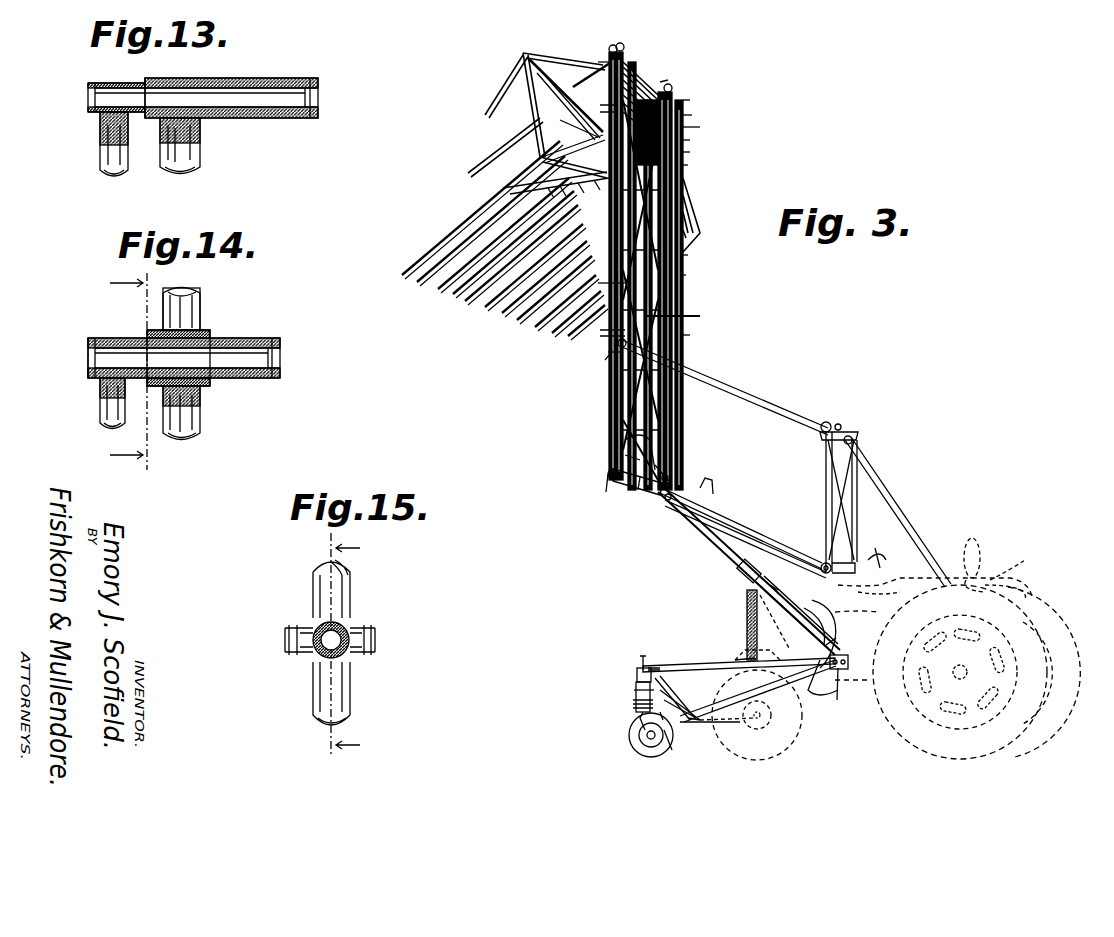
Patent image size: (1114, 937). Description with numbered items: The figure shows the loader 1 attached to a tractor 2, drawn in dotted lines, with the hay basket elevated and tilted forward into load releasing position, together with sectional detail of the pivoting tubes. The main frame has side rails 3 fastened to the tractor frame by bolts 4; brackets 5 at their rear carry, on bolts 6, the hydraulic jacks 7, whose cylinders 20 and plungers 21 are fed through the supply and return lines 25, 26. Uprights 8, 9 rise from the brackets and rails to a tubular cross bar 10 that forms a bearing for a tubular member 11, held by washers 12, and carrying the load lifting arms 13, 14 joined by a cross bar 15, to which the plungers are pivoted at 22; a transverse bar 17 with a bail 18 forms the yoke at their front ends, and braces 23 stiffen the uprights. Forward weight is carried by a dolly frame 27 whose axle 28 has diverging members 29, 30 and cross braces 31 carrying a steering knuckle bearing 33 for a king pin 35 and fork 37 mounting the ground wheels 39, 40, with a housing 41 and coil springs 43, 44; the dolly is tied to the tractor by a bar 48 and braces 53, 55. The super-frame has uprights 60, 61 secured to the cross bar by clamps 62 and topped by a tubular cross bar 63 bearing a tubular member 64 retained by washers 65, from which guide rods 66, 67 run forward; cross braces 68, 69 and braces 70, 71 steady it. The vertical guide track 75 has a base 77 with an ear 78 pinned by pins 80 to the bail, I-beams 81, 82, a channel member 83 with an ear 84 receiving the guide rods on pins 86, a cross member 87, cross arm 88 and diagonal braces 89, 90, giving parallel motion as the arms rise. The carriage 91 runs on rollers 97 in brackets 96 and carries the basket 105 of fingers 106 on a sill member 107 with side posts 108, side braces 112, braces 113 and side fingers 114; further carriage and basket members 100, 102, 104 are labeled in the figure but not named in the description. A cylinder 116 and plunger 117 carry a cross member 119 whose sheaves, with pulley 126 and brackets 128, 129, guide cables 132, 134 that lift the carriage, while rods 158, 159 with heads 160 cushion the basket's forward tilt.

In FIG. 3, the loader 1 is at (697, 362).
In FIG. 3, the tractor 2 is at (978, 585).
In FIG. 3, the side rails 3 is at (750, 652).
In FIG. 3, the bolts 4 is at (792, 658).
In FIG. 3, the brackets 5 is at (838, 695).
In FIG. 3, the bolts 6 is at (823, 677).
In FIG. 3, the hydraulic jacks 7 is at (730, 568).
In FIG. 3, the upright 8 is at (839, 655).
In FIG. 14, the upright 9 is at (200, 418).
In FIG. 15, the upright 9 is at (352, 690).
In FIG. 14, the tubular cross bar 10 is at (240, 338).
In FIG. 3, the tubular cross bar 10 is at (834, 557).
In FIG. 14, the tubular member 11 is at (100, 340).
In FIG. 15, the tubular member 11 is at (316, 655).
In FIG. 3, the tubular member 11 is at (822, 570).
In FIG. 14, the washers 12 is at (147, 334).
In FIG. 15, the washers 12 is at (326, 660).
In FIG. 3, the load lifting arm 13 is at (757, 512).
In FIG. 14, the load lifting arm 14 is at (102, 400).
In FIG. 15, the load lifting arm 14 is at (362, 644).
In FIG. 3, the load lifting arm 14 is at (787, 512).
In FIG. 14, the cross bar 15 is at (111, 371).
In FIG. 3, the cross bar 15 is at (690, 496).
In FIG. 3, the transverse bar 17 is at (672, 485).
In FIG. 3, the bail 18 is at (640, 490).
In FIG. 3, the cylinders 20 is at (746, 578).
In FIG. 3, the plungers 21 is at (700, 537).
In FIG. 3, the pivotal connection 22 is at (668, 502).
In FIG. 3, the braces 23 is at (822, 598).
In FIG. 3, the supply line 25 is at (836, 632).
In FIG. 3, the return line 26 is at (812, 626).
In FIG. 3, the dolly frame 27 is at (672, 756).
In FIG. 3, the axle 28 is at (676, 728).
In FIG. 3, the diverging member 29 is at (668, 700).
In FIG. 3, the diverging member 30 is at (668, 692).
In FIG. 3, the cross braces 31 is at (655, 680).
In FIG. 3, the steering knuckle bearing 33 is at (637, 678).
In FIG. 3, the king pin 35 is at (644, 658).
In FIG. 3, the fork 37 is at (635, 706).
In FIG. 3, the ground wheel 39 is at (636, 758).
In FIG. 3, the ground wheel 40 is at (790, 740).
In FIG. 3, the housing 41 is at (634, 690).
In FIG. 3, the coil spring 43 is at (590, 705).
In FIG. 3, the coil spring 44 is at (556, 185).
In FIG. 3, the bar 48 is at (730, 688).
In FIG. 3, the brace 53 is at (708, 664).
In FIG. 3, the brace 55 is at (740, 722).
In FIG. 3, the upright 60 is at (826, 497).
In FIG. 13, the upright 61 is at (205, 152).
In FIG. 14, the upright 61 is at (203, 306).
In FIG. 15, the upright 61 is at (352, 598).
In FIG. 3, the upright 61 is at (858, 517).
In FIG. 14, the clamps 62 is at (210, 332).
In FIG. 15, the clamps 62 is at (372, 634).
In FIG. 13, the tubular cross bar 63 is at (300, 78).
In FIG. 3, the tubular cross bar 63 is at (842, 428).
In FIG. 13, the tubular member 64 is at (98, 84).
In FIG. 3, the tubular member 64 is at (822, 436).
In FIG. 13, the washers 65 is at (148, 80).
In FIG. 3, the washers 65 is at (854, 440).
In FIG. 3, the guide rod 66 is at (756, 402).
In FIG. 13, the guide rod 67 is at (102, 160).
In FIG. 3, the cross brace 68 is at (828, 476).
In FIG. 3, the cross brace 69 is at (855, 505).
In FIG. 3, the brace 70 is at (898, 558).
In FIG. 3, the brace 71 is at (906, 520).
In FIG. 3, the vertical guide track 75 is at (688, 103).
In FIG. 3, the base 77 is at (606, 486).
In FIG. 3, the ear 78 is at (612, 462).
In FIG. 3, the pins 80 is at (608, 475).
In FIG. 3, the I-beam 81 is at (605, 360).
In FIG. 3, the I-beam 82 is at (684, 300).
In FIG. 3, the channel member 83 is at (690, 335).
In FIG. 3, the ear 84 is at (617, 346).
In FIG. 3, the pins 86 is at (610, 352).
In FIG. 3, the cross member 87 is at (664, 80).
In FIG. 3, the cross arm 88 is at (688, 164).
In FIG. 3, the diagonal brace 89 is at (598, 283).
In FIG. 3, the diagonal brace 90 is at (683, 276).
In FIG. 3, the carriage 91 is at (600, 62).
In FIG. 3, the brackets 96 is at (698, 128).
In FIG. 3, the rollers 97 is at (690, 115).
In FIG. 3, the carriage rail 100 is at (564, 92).
In FIG. 3, the carriage roller 102 is at (626, 107).
In FIG. 3, the carriage frame member 104 is at (548, 90).
In FIG. 3, the basket 105 is at (522, 162).
In FIG. 3, the fingers 106 is at (440, 252).
In FIG. 3, the sill member 107 is at (540, 162).
In FIG. 3, the side posts 108 is at (530, 108).
In FIG. 3, the side braces 112 is at (533, 100).
In FIG. 3, the braces 113 is at (579, 123).
In FIG. 3, the side fingers 114 is at (484, 112).
In FIG. 3, the cylinder 116 is at (691, 317).
In FIG. 3, the plunger 117 is at (684, 258).
In FIG. 3, the cross member 119 is at (690, 153).
In FIG. 3, the pulley 126 is at (620, 450).
In FIG. 3, the bracket 128 is at (618, 50).
In FIG. 3, the bracket 129 is at (670, 92).
In FIG. 3, the cable 132 is at (608, 331).
In FIG. 3, the cable 134 is at (690, 181).
In FIG. 3, the rod 158 is at (598, 72).
In FIG. 3, the rod 159 is at (690, 141).
In FIG. 3, the heads 160 is at (613, 48).